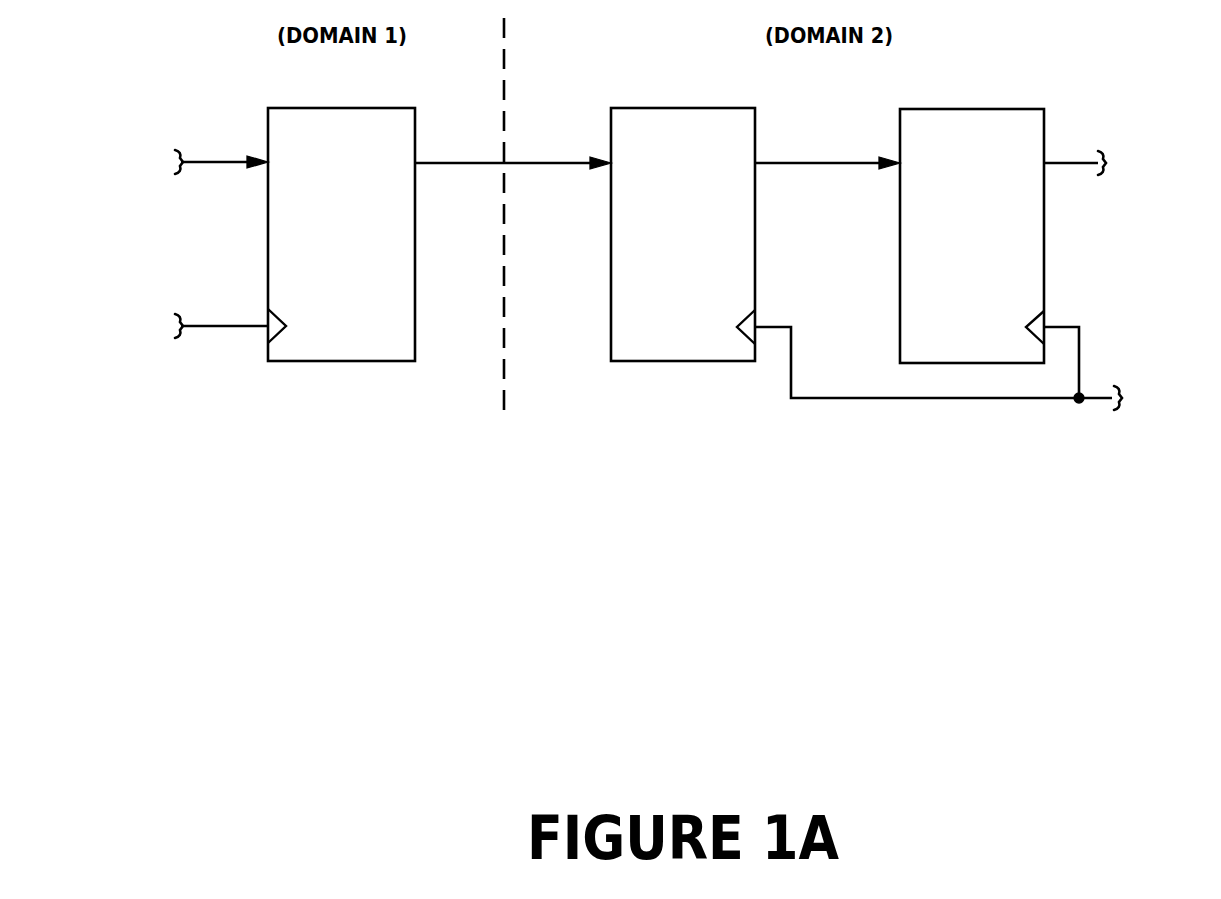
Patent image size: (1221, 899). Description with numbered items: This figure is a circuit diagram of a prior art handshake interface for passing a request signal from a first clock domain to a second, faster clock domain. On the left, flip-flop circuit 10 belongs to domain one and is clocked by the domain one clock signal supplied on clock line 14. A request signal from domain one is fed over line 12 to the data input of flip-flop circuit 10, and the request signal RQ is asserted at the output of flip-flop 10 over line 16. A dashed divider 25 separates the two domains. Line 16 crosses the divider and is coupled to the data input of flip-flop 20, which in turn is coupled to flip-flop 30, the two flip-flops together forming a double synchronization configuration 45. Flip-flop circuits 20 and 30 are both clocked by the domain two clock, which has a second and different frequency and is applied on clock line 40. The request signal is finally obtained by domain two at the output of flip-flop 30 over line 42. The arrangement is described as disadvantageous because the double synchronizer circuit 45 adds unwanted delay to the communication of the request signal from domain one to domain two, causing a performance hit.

The flip-flop circuit 10 is at (398, 354).
The line 12 is at (225, 158).
The clock line 14 is at (227, 321).
The line 16 is at (460, 166).
The flip-flop circuit 20 is at (646, 354).
The dashed divider 25 is at (507, 377).
The flip-flop circuit 30 is at (935, 354).
The clock line 40 is at (911, 401).
The line 42 is at (1084, 159).
The double synchronization configuration 45 is at (801, 434).